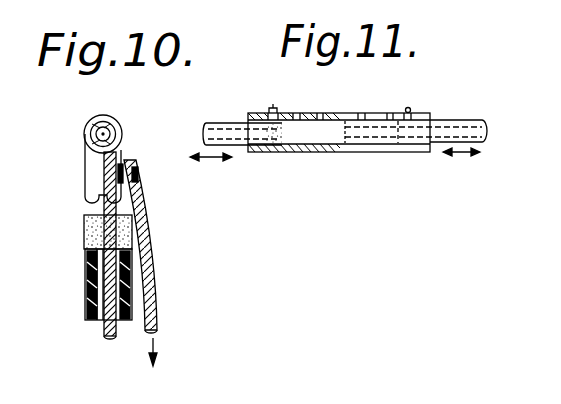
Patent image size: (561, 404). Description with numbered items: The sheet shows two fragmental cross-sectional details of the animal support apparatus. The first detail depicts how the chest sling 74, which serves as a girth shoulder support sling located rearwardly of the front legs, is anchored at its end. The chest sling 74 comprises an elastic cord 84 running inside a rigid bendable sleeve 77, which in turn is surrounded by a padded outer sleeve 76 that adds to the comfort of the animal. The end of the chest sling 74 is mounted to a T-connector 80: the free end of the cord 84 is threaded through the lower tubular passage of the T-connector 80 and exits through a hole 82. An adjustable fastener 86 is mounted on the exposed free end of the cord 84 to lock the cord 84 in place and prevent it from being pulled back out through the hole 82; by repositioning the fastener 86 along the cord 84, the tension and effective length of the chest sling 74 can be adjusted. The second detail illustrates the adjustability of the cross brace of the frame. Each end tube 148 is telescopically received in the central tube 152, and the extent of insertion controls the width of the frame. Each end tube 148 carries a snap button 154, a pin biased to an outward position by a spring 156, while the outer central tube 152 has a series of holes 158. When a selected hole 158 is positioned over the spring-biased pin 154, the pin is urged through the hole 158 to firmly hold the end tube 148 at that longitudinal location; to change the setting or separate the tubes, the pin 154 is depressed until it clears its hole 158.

In FIG. 10, the chest sling 74 is at (80, 314).
In FIG. 10, the padded outer sleeve 76 is at (83, 267).
In FIG. 10, the rigid bendable sleeve 77 is at (88, 293).
In FIG. 10, the T-connector 80 is at (121, 120).
In FIG. 10, the hole 82 is at (124, 146).
In FIG. 10, the elastic cord 84 is at (153, 268).
In FIG. 10, the adjustable fastener 86 is at (139, 175).
In FIG. 11, the end tube 148 is at (220, 132).
In FIG. 11, the central tube 152 is at (365, 142).
In FIG. 11, the snap button 154 is at (269, 113).
In FIG. 11, the spring 156 is at (295, 158).
In FIG. 11, the holes 158 is at (318, 113).